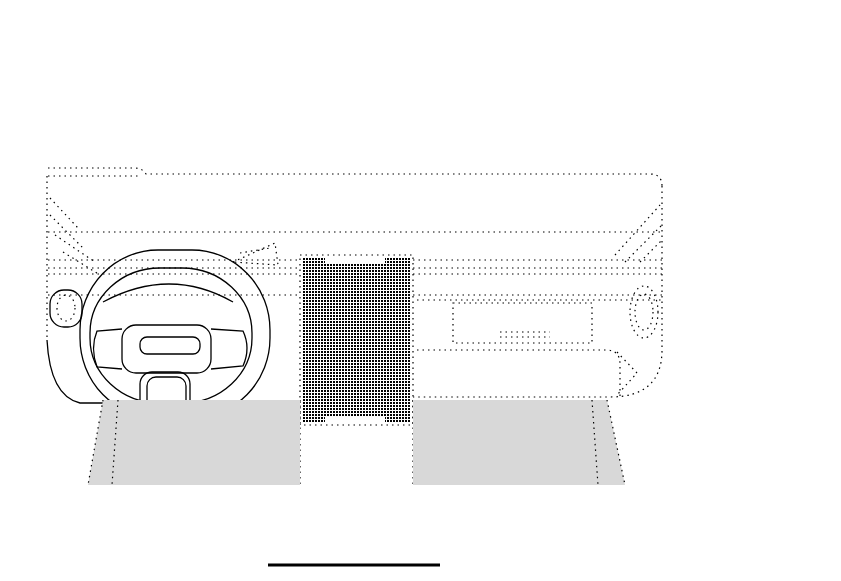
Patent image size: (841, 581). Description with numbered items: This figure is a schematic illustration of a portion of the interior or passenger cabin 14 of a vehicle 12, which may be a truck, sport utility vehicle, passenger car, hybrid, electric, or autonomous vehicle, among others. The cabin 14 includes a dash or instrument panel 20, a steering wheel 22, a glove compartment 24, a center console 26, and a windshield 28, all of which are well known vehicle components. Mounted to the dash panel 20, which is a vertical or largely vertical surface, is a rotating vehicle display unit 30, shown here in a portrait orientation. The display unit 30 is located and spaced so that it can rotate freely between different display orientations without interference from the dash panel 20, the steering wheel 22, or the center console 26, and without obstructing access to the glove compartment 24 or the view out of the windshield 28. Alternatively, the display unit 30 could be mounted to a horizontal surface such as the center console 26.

The vehicle 12 is at (468, 102).
The vehicle interior or passenger cabin 14 is at (690, 327).
The dash or instrument panel 20 is at (435, 317).
The steering wheel 22 is at (160, 253).
The glove compartment 24 is at (557, 303).
The center console 26 is at (378, 457).
The windshield 28 is at (365, 168).
The rotating vehicle display unit 30 is at (404, 378).